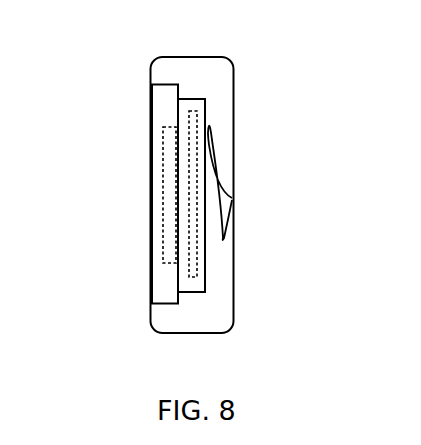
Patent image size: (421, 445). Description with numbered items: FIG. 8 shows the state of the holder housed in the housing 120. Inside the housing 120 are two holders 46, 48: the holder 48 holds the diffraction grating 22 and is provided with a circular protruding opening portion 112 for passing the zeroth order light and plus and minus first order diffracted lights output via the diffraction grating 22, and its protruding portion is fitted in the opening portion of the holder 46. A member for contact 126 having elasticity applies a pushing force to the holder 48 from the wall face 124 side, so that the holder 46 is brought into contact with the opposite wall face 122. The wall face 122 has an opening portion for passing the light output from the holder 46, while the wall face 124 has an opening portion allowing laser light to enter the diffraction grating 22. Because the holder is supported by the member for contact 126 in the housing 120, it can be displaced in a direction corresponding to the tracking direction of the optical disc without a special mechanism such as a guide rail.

The housing 120 is at (233, 60).
The holder 46 is at (156, 104).
The diffraction grating 22 is at (193, 111).
The opening portion 112 is at (163, 145).
The member for contact 126 is at (213, 150).
The holder 48 is at (207, 277).
The wall face 122 is at (150, 313).
The wall face 124 is at (228, 312).